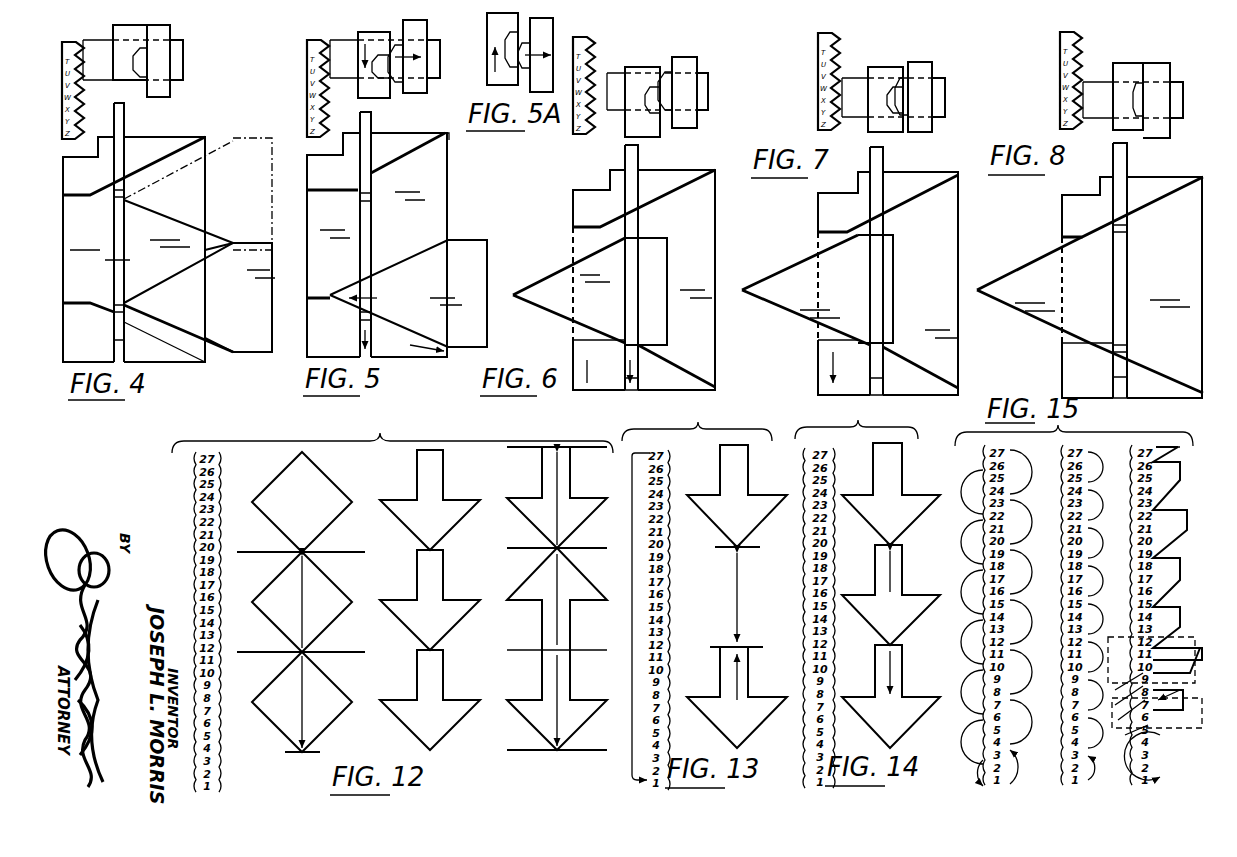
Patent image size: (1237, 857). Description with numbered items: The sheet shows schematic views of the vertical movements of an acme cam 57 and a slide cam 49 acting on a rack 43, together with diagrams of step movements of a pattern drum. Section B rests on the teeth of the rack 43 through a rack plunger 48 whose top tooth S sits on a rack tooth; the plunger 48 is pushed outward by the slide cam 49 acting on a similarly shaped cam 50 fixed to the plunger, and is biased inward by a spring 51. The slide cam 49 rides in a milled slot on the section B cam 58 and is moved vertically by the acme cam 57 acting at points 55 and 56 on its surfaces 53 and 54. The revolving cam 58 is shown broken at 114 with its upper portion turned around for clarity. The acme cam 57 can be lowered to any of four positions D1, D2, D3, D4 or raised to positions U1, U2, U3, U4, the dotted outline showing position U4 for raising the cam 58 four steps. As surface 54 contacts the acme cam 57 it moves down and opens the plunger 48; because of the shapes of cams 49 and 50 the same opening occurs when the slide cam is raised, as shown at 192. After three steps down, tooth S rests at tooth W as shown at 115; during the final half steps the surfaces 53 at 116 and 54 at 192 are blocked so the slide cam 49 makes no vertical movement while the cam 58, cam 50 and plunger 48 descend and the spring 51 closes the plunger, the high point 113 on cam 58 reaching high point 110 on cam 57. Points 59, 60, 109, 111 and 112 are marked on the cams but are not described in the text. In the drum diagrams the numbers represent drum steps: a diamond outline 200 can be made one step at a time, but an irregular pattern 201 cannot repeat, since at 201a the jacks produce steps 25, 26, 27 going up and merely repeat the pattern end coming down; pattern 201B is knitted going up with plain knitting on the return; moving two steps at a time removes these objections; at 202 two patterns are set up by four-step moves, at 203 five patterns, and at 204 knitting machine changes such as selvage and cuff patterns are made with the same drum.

In FIG. 4, the rack 43 is at (73, 42).
In FIG. 5, the rack 43 is at (313, 40).
In FIG. 6, the rack 43 is at (596, 38).
In FIG. 7, the rack 43 is at (830, 34).
In FIG. 8, the rack 43 is at (1070, 33).
In FIG. 4, the rack plunger 48 is at (97, 46).
In FIG. 5, the rack plunger 48 is at (345, 42).
In FIG. 6, the rack plunger 48 is at (627, 72).
In FIG. 7, the rack plunger 48 is at (850, 78).
In FIG. 8, the rack plunger 48 is at (1100, 82).
In FIG. 4, the slide cam 49 is at (140, 27).
In FIG. 5, the slide cam 49 is at (372, 33).
In FIG. 5A, the slide cam 49 is at (489, 25).
In FIG. 6, the slide cam 49 is at (650, 66).
In FIG. 7, the slide cam 49 is at (886, 67).
In FIG. 8, the slide cam 49 is at (1128, 63).
In FIG. 4, the cam 50 is at (172, 45).
In FIG. 5, the cam 50 is at (428, 25).
In FIG. 5A, the cam 50 is at (553, 24).
In FIG. 6, the cam 50 is at (690, 56).
In FIG. 7, the cam 50 is at (920, 62).
In FIG. 8, the cam 50 is at (1160, 63).
In FIG. 7, the spring 51 is at (948, 90).
In FIG. 8, the spring 51 is at (1185, 91).
In FIG. 4, the cam surface 53 is at (114, 205).
In FIG. 5, the cam surface 53 is at (358, 205).
In FIG. 6, the cam surface 53 is at (638, 230).
In FIG. 7, the cam surface 53 is at (885, 228).
In FIG. 4, the cam surface 54 is at (113, 300).
In FIG. 5, the cam surface 54 is at (360, 320).
In FIG. 6, the cam surface 54 is at (625, 352).
In FIG. 7, the cam surface 54 is at (886, 348).
In FIG. 8, the cam surface 54 is at (1128, 348).
In FIG. 4, the acting point 55 is at (175, 273).
In FIG. 5, the acting point 55 is at (400, 262).
In FIG. 8, the acting point 55 is at (1065, 268).
In FIG. 4, the acting point 56 is at (183, 338).
In FIG. 5, the acting point 56 is at (388, 322).
In FIG. 8, the acting point 56 is at (1070, 338).
In FIG. 5, the acme cam 57 is at (470, 241).
In FIG. 6, the acme cam 57 is at (668, 292).
In FIG. 7, the acme cam 57 is at (894, 293).
In FIG. 8, the acme cam 57 is at (1128, 293).
In FIG. 4, the section B cam 58 is at (205, 208).
In FIG. 5, the section B cam 58 is at (449, 192).
In FIG. 6, the section B cam 58 is at (715, 232).
In FIG. 7, the section B cam 58 is at (960, 225).
In FIG. 8, the section B cam 58 is at (1200, 275).
In FIG. 4, the upper wedge surface 59 is at (145, 167).
In FIG. 5, the upper wedge surface 59 is at (390, 168).
In FIG. 8, the upper wedge surface 59 is at (1112, 232).
In FIG. 4, the stop 60 is at (144, 322).
In FIG. 8, the stop 60 is at (1106, 358).
In FIG. 5, the cam apex 109 is at (329, 293).
In FIG. 8, the cam apex 109 is at (985, 290).
In FIG. 5, the high point 110 is at (451, 247).
In FIG. 8, the high point 110 is at (1084, 243).
In FIG. 5, the block corner 111 is at (489, 241).
In FIG. 5, the block corner 112 is at (446, 132).
In FIG. 8, the block corner 112 is at (1190, 185).
In FIG. 5, the high point 113 is at (343, 183).
In FIG. 8, the high point 113 is at (1082, 236).
In FIG. 4, the break point 114 is at (118, 90).
In FIG. 5, the break point 114 is at (362, 88).
In FIG. 6, the break point 114 is at (640, 140).
In FIG. 7, the break point 114 is at (887, 135).
In FIG. 8, the break point 114 is at (1128, 160).
In FIG. 6, the tooth position 115 is at (607, 76).
In FIG. 7, the contact point 116 is at (874, 240).
In FIG. 7, the contact point 192 is at (880, 340).
In FIG. 12, the diamond outline 200 is at (275, 720).
In FIG. 12, the irregular pattern 201 is at (438, 735).
In FIG. 12, the jack setup 201a is at (532, 722).
In FIG. 13, the pattern 201B is at (752, 728).
In FIG. 15, the two-pattern setup 202 is at (1016, 700).
In FIG. 15, the five-pattern setup 203 is at (1095, 765).
In FIG. 15, the improved pattern setup 204 is at (1166, 762).
In FIG. 12, the drum step 25 is at (542, 625).
In FIG. 12, the drum step 26 is at (542, 642).
In FIG. 12, the drum step 27 is at (542, 653).
In FIG. 4, the upward step position U1 is at (223, 153).
In FIG. 4, the upward step position U2 is at (194, 168).
In FIG. 4, the upward step position U3 is at (164, 182).
In FIG. 4, the upward step position U4 is at (142, 195).
In FIG. 4, the downward step position D1 is at (223, 337).
In FIG. 6, the downward step position D1 is at (613, 333).
In FIG. 4, the downward step position D2 is at (198, 325).
In FIG. 6, the downward step position D2 is at (583, 322).
In FIG. 4, the downward step position D3 is at (166, 313).
In FIG. 6, the downward step position D3 is at (554, 308).
In FIG. 4, the downward step position D4 is at (138, 300).
In FIG. 6, the downward step position D4 is at (521, 297).